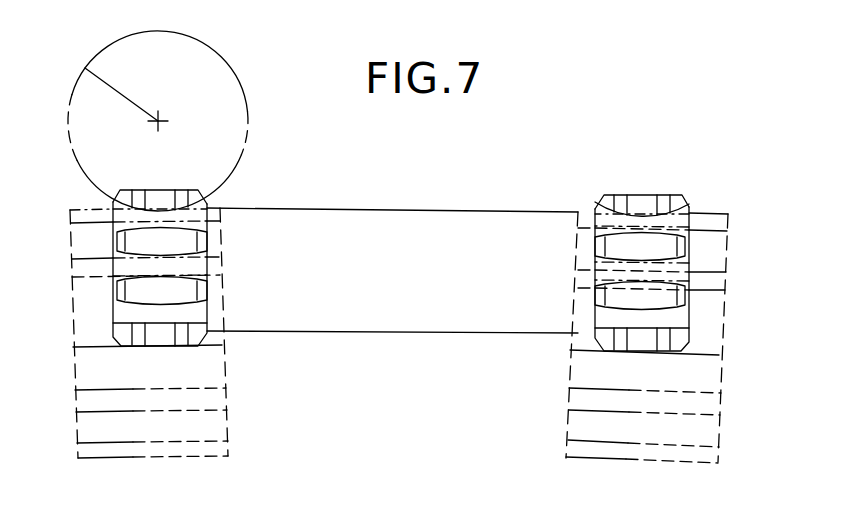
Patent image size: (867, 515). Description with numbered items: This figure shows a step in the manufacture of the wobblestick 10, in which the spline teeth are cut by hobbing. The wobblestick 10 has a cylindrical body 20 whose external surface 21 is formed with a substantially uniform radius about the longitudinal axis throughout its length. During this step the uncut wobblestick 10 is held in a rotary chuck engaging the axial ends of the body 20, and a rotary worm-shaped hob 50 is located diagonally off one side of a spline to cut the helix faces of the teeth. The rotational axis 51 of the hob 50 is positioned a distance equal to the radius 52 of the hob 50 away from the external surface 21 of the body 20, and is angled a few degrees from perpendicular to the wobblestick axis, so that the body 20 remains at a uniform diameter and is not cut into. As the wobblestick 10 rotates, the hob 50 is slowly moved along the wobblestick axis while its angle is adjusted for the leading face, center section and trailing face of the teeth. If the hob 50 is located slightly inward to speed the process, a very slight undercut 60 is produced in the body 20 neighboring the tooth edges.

The wobblestick 10 is at (401, 247).
The body 20 is at (440, 210).
The external surface 21 is at (379, 292).
The hob 50 is at (234, 72).
The rotational axis of the hob 51 is at (168, 121).
The radius of the hob 52 is at (113, 83).
The undercut 60 is at (198, 213).